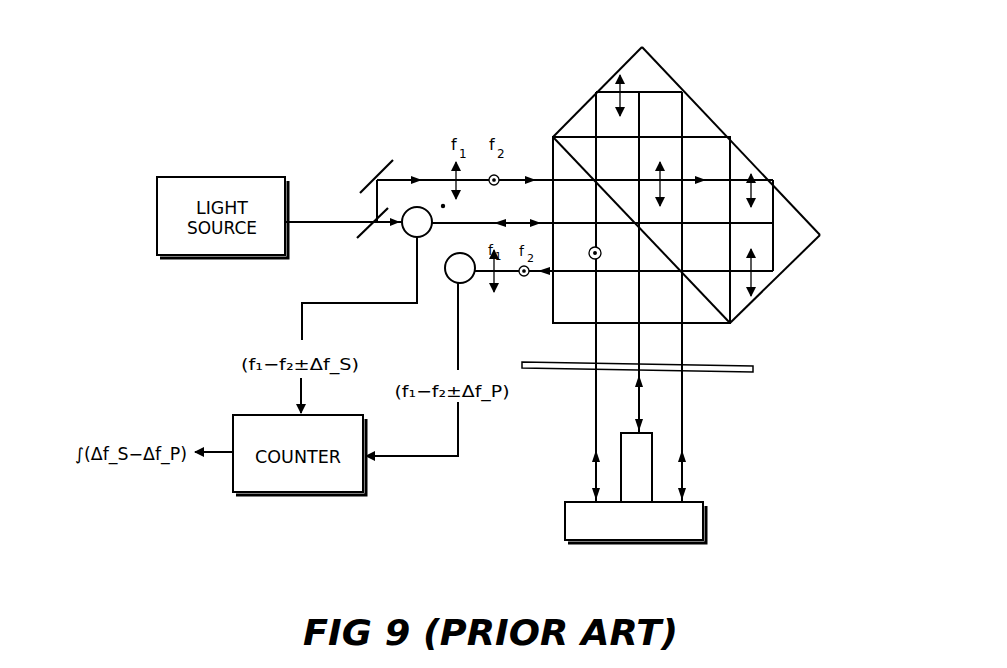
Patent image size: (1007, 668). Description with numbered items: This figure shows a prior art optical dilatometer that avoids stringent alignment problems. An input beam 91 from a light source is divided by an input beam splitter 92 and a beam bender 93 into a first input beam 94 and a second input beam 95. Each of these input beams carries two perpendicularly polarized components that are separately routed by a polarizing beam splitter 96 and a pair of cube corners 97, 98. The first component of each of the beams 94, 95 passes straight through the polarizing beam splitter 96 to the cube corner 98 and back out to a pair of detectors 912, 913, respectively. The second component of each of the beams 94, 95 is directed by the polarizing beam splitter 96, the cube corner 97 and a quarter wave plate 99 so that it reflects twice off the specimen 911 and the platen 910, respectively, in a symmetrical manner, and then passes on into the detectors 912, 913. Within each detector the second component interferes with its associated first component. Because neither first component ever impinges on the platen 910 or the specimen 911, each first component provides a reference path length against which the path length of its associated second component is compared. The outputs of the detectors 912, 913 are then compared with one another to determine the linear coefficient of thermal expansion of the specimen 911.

The input beam 91 is at (350, 228).
The input beam splitter 92 is at (372, 210).
The beam bender 93 is at (374, 165).
The first input beam 94 is at (458, 221).
The second input beam 95 is at (402, 172).
The polarizing beam splitter 96 is at (556, 138).
The cube corner 97 is at (665, 67).
The cube corner 98 is at (745, 153).
The quarter wave plate 99 is at (717, 364).
The platen 910 is at (705, 507).
The specimen 911 is at (643, 465).
The detector 912 is at (412, 238).
The detector 913 is at (468, 270).